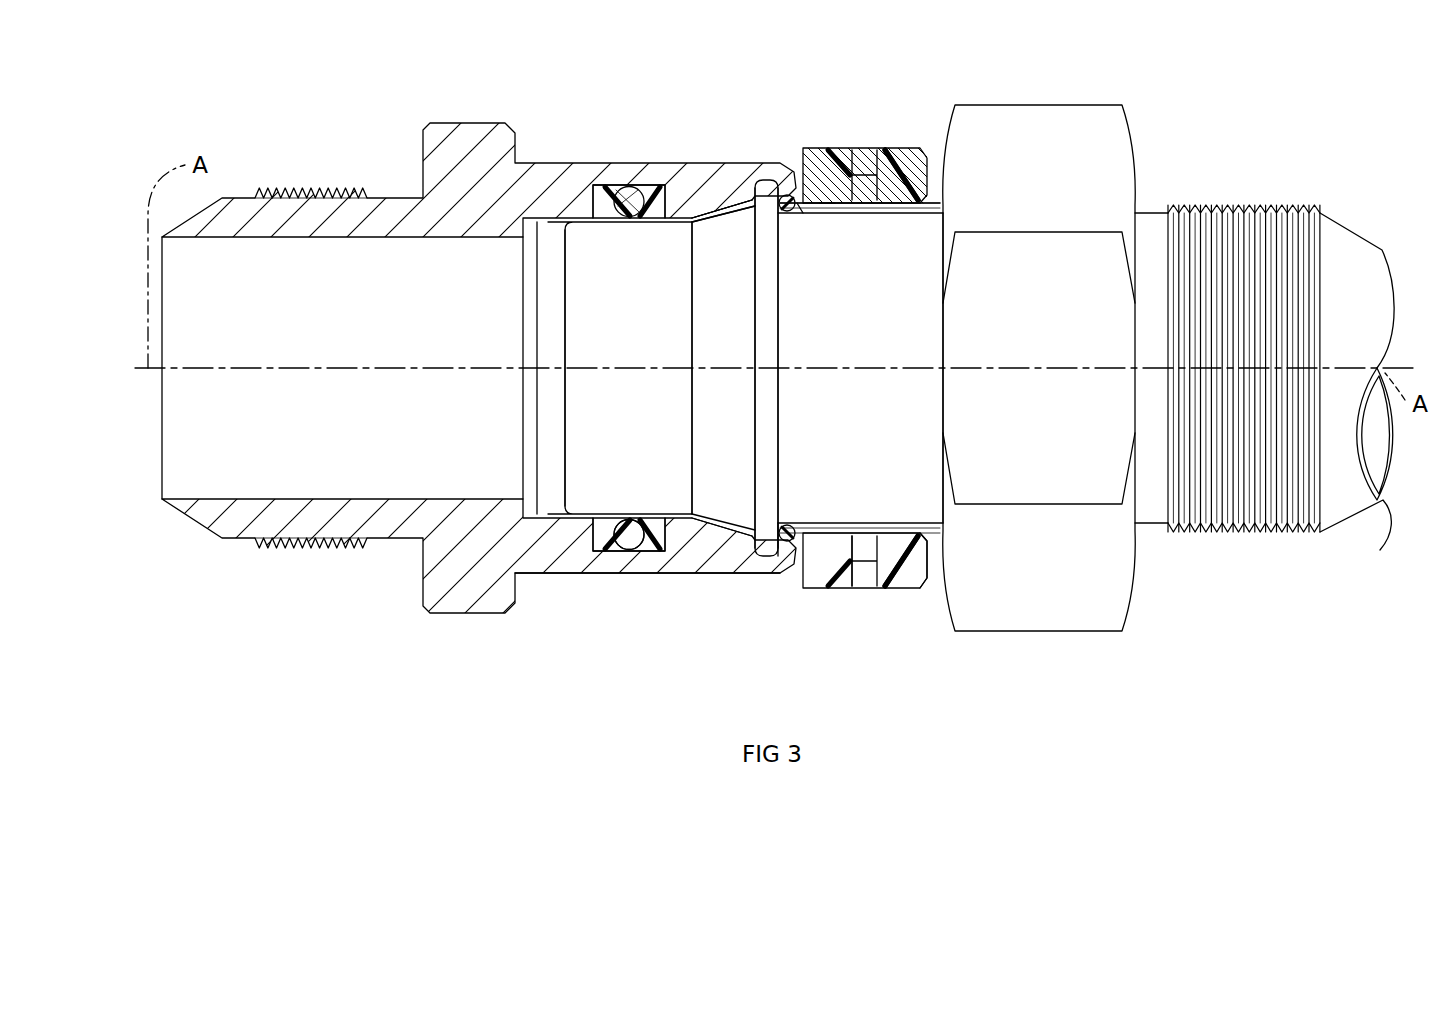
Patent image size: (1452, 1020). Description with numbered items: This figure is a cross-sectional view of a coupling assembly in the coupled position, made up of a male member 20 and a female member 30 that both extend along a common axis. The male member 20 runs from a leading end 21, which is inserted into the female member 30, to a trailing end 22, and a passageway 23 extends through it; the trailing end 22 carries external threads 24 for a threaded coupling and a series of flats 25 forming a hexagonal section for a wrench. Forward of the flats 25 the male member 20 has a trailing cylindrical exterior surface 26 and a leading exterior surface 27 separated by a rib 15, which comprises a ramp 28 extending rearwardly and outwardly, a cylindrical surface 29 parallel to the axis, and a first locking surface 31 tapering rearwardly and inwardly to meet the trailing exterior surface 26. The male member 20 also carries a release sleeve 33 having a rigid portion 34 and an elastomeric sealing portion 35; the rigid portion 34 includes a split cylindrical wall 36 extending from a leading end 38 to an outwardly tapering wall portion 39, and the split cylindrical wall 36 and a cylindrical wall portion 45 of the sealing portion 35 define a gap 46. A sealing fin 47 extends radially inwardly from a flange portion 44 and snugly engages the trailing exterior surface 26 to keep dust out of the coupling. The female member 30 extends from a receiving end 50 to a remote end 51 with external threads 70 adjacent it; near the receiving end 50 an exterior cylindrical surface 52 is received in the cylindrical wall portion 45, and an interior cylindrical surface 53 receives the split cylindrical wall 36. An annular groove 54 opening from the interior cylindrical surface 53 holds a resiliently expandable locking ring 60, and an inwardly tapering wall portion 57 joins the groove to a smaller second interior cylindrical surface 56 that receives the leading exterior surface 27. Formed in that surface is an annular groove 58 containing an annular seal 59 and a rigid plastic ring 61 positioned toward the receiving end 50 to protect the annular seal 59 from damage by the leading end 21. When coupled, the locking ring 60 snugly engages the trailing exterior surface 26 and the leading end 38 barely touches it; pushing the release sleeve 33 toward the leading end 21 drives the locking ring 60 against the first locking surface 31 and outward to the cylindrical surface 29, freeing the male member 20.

The rib 15 is at (767, 540).
The male member 20 is at (1164, 126).
The leading end 21 is at (553, 455).
The trailing end 22 is at (1397, 268).
The passageway 23 is at (1383, 505).
The external threads 24 is at (1250, 206).
The flats 25 is at (1058, 130).
The trailing cylindrical exterior surface 26 is at (843, 527).
The leading exterior surface 27 is at (587, 227).
The ramp 28 is at (722, 215).
The cylindrical surface 29 is at (770, 327).
The female member 30 is at (430, 93).
The first locking surface 31 is at (778, 415).
The release sleeve 33 is at (862, 122).
The rigid portion 34 is at (880, 213).
The sealing portion 35 is at (847, 152).
The split cylindrical wall 36 is at (820, 527).
The leading end 38 is at (806, 212).
The outwardly tapering wall portion 39 is at (933, 563).
The flange portion 44 is at (945, 178).
The cylindrical wall portion 45 is at (820, 580).
The gap 46 is at (868, 152).
The sealing fin 47 is at (890, 527).
The receiving end 50 is at (787, 194).
The remote end 51 is at (162, 486).
The exterior cylindrical surface 52 is at (710, 572).
The interior cylindrical surface 53 is at (827, 204).
The annular groove 54 is at (747, 190).
The second interior cylindrical surface 56 is at (547, 237).
The inwardly tapering wall portion 57 is at (688, 210).
The annular groove 58 is at (583, 553).
The annular seal 59 is at (622, 190).
The locking ring 60 is at (770, 183).
The rigid plastic ring 61 is at (658, 553).
The external threads 70 is at (340, 190).